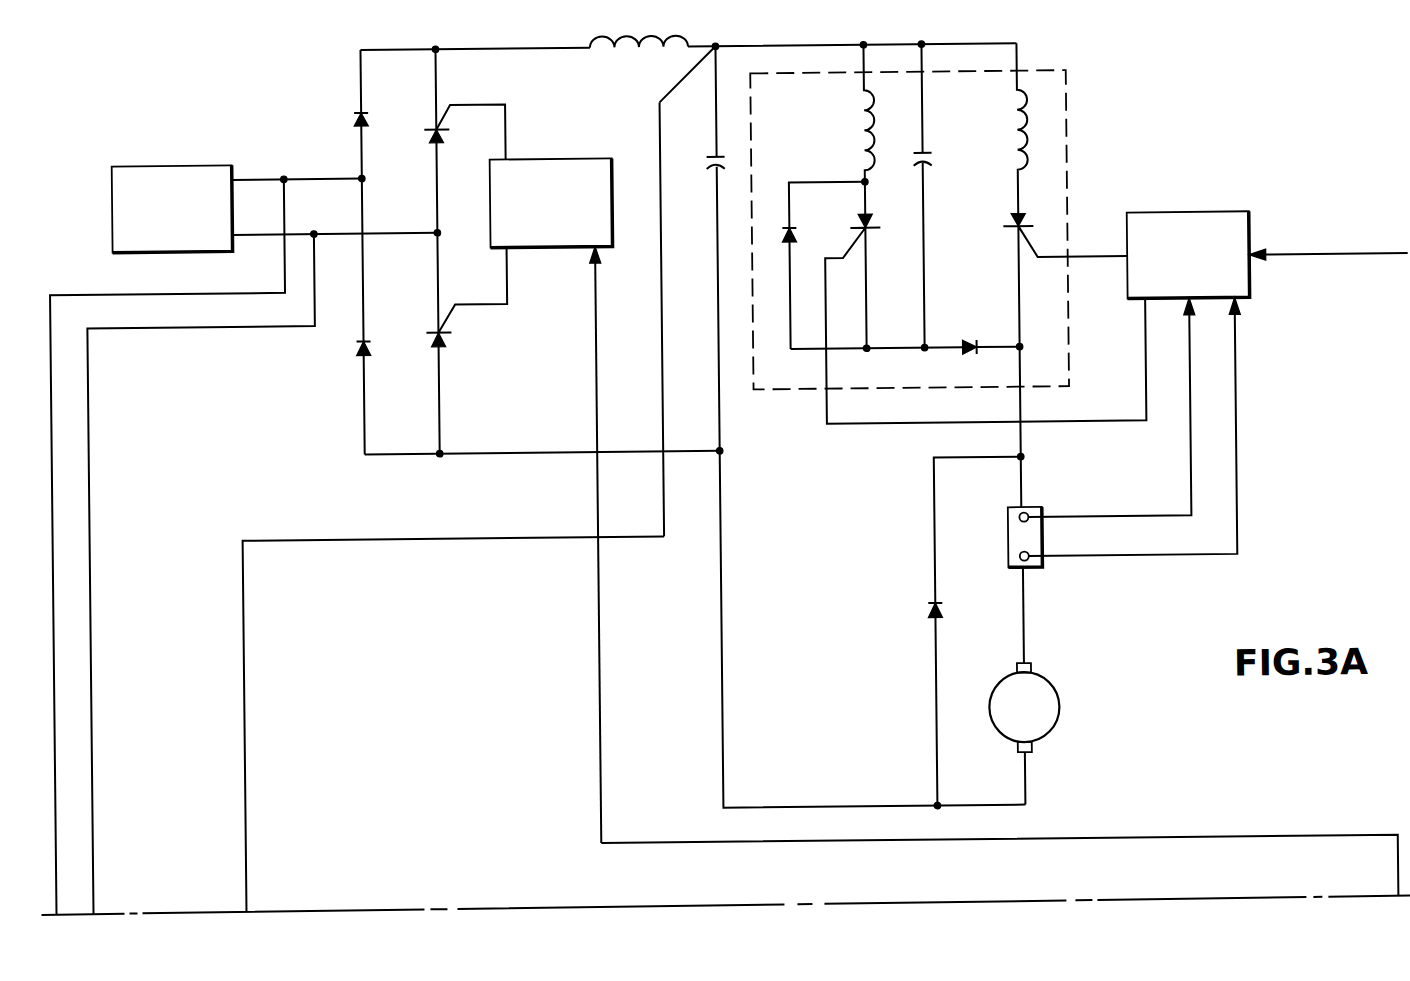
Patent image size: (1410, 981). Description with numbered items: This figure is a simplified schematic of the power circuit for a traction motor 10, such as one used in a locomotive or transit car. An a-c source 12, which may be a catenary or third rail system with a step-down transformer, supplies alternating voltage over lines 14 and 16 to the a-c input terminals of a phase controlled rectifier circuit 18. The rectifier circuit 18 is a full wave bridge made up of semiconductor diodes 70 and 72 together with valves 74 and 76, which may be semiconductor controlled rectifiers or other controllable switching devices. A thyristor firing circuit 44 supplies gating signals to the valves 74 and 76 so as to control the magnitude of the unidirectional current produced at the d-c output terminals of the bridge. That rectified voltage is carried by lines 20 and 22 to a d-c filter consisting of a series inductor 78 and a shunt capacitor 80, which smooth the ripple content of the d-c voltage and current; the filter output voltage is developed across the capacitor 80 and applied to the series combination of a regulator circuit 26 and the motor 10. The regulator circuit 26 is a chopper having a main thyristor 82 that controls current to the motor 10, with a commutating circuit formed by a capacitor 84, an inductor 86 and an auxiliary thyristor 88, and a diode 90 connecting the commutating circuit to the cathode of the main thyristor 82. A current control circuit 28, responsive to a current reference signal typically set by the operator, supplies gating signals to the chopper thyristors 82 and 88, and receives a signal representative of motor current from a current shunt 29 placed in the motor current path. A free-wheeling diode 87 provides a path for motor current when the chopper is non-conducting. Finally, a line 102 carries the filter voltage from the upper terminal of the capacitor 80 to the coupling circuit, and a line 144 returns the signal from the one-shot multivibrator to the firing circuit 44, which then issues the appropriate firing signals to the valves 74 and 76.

The electric motor 10 is at (1054, 686).
The a-c source 12 is at (190, 160).
The line 14 is at (278, 171).
The line 16 is at (407, 230).
The phase controlled rectifier circuit 18 is at (415, 91).
The line 20 is at (523, 46).
The line 22 is at (513, 450).
The regulator circuit 26 is at (1071, 114).
The current control circuit 28 is at (1224, 216).
The current shunt 29 is at (1007, 547).
The thyristor firing circuit 44 is at (589, 157).
The semiconductor diode 70 is at (357, 110).
The semiconductor diode 72 is at (356, 343).
The valve 74 is at (432, 136).
The valve 76 is at (435, 337).
The series inductor 78 is at (648, 37).
The shunt capacitor 80 is at (712, 159).
The main thyristor 82 is at (1008, 222).
The capacitor 84 is at (937, 159).
The inductor 86 is at (862, 126).
The free-wheeling diode 87 is at (926, 606).
The auxiliary thyristor 88 is at (864, 223).
The diode 90 is at (976, 341).
The line 102 is at (458, 519).
The line 144 is at (1332, 843).